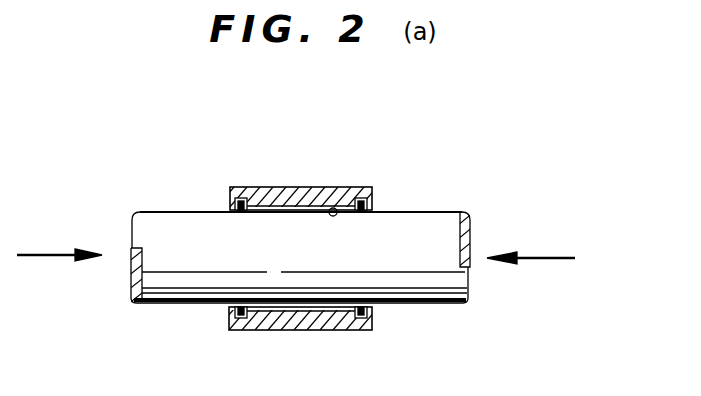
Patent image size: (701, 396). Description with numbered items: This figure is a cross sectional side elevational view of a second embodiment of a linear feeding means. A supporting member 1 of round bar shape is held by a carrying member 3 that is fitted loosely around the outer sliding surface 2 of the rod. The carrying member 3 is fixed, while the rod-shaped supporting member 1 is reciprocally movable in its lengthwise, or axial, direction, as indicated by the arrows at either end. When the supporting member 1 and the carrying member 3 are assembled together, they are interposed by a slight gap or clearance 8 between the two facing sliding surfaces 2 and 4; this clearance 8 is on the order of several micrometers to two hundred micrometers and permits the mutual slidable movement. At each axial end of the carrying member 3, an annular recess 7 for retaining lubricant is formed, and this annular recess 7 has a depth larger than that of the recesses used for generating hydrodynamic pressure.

The supporting member 1 is at (186, 305).
The outer sliding surface 2 is at (268, 187).
The carrying member 3 is at (296, 187).
The sliding surface 4 is at (350, 187).
The annular recess 7 is at (238, 188).
The clearance 8 is at (333, 208).